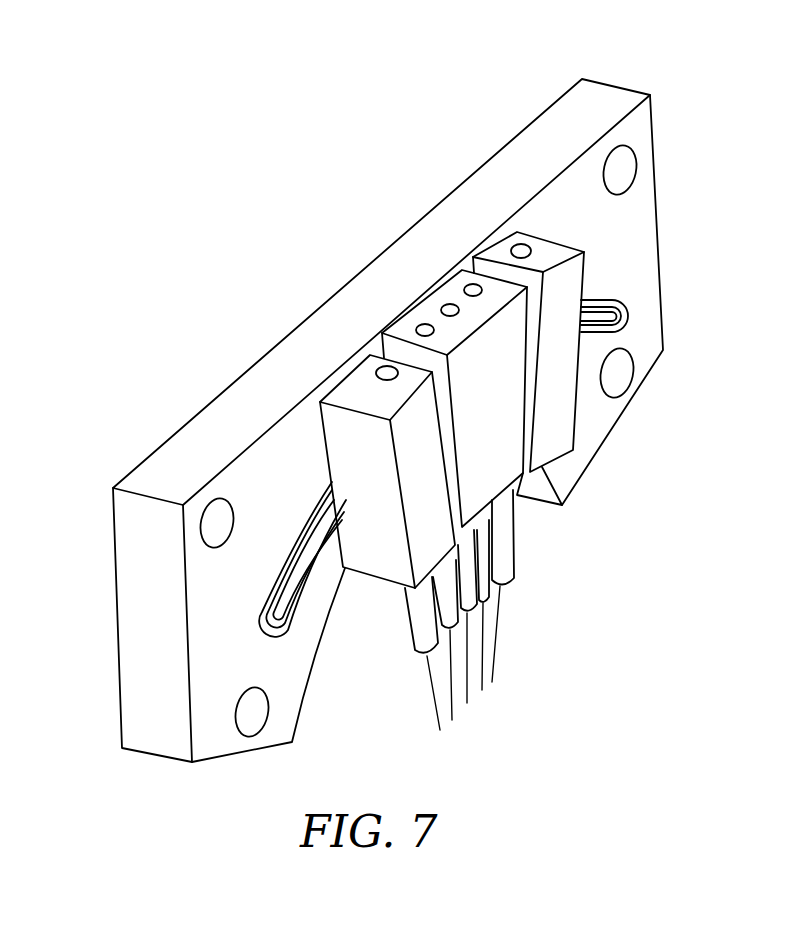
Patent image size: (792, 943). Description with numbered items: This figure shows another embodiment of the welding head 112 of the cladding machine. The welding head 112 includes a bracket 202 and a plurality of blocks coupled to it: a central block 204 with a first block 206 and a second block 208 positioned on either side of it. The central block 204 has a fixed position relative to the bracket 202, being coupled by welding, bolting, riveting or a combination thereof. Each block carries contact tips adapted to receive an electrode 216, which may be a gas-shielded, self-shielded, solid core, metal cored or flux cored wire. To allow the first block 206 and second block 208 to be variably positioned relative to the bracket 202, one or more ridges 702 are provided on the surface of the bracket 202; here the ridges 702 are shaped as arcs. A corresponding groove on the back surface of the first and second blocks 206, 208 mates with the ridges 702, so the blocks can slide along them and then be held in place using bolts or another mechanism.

The welding head 112 is at (708, 584).
The bracket 202 is at (607, 105).
The central block 204 is at (506, 421).
The first block 206 is at (440, 500).
The second block 208 is at (573, 376).
The electrode 216 is at (503, 692).
The ridges 702 is at (300, 510).